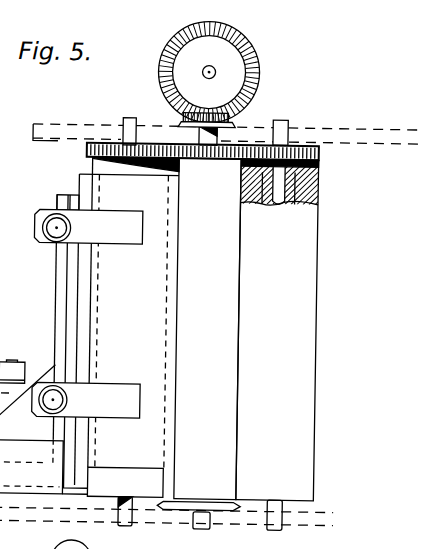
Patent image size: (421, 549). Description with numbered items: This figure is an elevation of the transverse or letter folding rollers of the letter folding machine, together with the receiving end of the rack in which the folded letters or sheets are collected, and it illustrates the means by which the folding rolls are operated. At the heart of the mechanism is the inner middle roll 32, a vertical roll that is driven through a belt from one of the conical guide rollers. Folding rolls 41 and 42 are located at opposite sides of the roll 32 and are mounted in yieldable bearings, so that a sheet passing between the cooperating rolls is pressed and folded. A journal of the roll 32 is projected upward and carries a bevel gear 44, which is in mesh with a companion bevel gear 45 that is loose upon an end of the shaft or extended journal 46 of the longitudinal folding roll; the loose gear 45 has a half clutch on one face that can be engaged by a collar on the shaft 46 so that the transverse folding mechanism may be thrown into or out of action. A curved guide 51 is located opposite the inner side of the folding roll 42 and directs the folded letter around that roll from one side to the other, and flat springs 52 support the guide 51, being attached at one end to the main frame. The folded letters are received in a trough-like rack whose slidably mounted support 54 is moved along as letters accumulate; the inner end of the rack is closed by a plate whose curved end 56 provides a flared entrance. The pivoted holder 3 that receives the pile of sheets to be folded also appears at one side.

The holder 3 is at (57, 328).
The inner middle roll 32 is at (238, 296).
The folding roll 41 is at (271, 494).
The folding roll 42 is at (125, 496).
The bevel gear 44 is at (234, 120).
The companion bevel gear 45 is at (253, 52).
The shaft or extended journal 46 is at (206, 78).
The curved guide 51 is at (168, 370).
The flat springs 52 is at (134, 244).
The support 54 is at (67, 329).
The curved inner end 56 is at (80, 325).